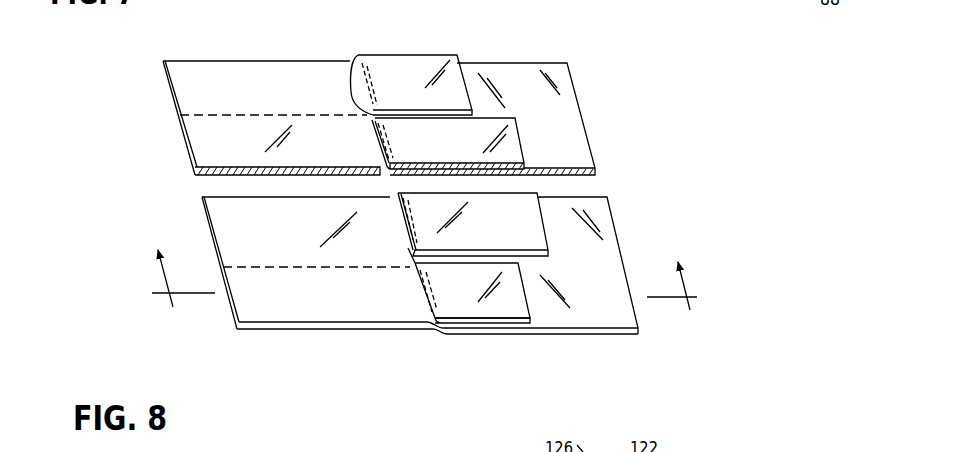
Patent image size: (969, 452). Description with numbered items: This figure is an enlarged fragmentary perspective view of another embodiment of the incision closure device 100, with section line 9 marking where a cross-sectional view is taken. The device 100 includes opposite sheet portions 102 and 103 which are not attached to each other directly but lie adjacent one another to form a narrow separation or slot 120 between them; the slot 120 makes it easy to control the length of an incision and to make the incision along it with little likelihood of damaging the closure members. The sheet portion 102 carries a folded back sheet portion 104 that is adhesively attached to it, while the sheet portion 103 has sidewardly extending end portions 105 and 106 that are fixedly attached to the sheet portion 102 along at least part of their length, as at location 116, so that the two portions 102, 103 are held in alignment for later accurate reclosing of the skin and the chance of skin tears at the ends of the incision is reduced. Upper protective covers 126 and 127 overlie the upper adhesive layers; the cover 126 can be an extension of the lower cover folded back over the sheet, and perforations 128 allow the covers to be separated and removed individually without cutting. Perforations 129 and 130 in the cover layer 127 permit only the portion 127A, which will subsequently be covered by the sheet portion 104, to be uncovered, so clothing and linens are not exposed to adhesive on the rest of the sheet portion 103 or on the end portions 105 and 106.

The device 100 is at (442, 193).
The sheet portion 102 is at (434, 289).
The sheet portion 103 is at (285, 325).
The folded back sheet portion 104 is at (543, 252).
The end portion 105 is at (472, 322).
The end portion 106 is at (453, 112).
The attachment location 116 is at (418, 113).
The slot 120 is at (409, 247).
The upper protective cover 126 is at (507, 152).
The upper protective cover 127 is at (376, 294).
The portion of cover layer 127A is at (303, 133).
The perforations 128 is at (380, 136).
The perforations 129 is at (210, 113).
The perforations 130 is at (267, 268).
The section line 9- 9 is at (418, 280).